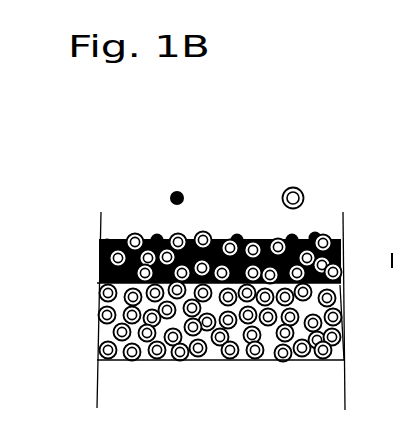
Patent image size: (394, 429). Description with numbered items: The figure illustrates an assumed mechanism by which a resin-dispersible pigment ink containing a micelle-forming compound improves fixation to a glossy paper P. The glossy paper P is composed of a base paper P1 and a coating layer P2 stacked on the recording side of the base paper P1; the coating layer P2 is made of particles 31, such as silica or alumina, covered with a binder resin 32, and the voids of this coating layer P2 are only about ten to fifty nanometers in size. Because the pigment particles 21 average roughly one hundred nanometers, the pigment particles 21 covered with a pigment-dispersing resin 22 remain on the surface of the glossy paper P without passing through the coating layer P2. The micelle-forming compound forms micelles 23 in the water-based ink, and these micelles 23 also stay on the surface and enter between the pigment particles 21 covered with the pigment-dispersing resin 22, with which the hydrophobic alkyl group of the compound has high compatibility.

The pigment particle 21 is at (304, 198).
The pigment-dispersing resin 22 is at (289, 189).
The micelle 23 is at (173, 191).
The particle 31 is at (345, 345).
The binder resin 32 is at (343, 350).
The glossy paper P is at (53, 283).
The base paper P1 is at (122, 380).
The coating layer P2 is at (95, 285).